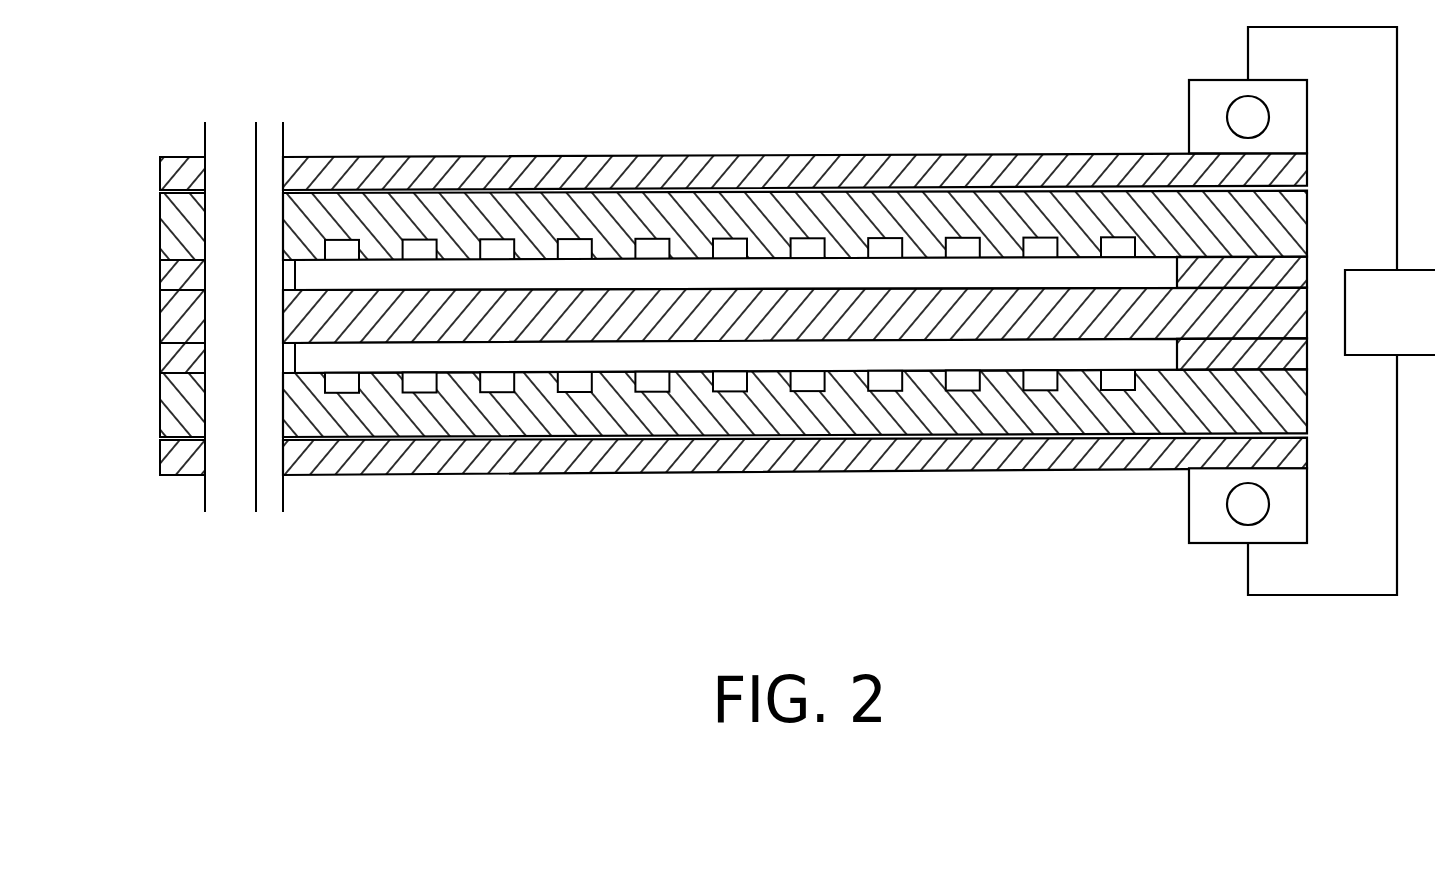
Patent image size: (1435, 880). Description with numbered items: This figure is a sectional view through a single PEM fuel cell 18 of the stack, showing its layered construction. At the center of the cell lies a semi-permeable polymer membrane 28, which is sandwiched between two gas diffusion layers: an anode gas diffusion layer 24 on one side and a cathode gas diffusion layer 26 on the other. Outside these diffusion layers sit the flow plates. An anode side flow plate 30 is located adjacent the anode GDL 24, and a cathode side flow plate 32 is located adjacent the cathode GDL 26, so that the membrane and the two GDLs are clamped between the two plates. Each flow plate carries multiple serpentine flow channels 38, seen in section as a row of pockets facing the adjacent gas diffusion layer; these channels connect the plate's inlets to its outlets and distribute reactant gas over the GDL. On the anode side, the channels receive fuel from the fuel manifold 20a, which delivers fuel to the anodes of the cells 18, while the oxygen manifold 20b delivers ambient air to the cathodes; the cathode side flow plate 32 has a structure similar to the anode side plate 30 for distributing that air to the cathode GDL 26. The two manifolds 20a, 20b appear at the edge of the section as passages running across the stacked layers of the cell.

The PEM fuel cell 18 is at (793, 369).
The fuel manifold 20a is at (230, 138).
The oxygen manifold 20b is at (270, 500).
The anode gas diffusion layer 24 is at (885, 368).
The cathode gas diffusion layer 26 is at (885, 258).
The semi-permeable polymer membrane 28 is at (1042, 305).
The anode side flow plate 30 is at (795, 461).
The cathode side flow plate 32 is at (486, 250).
The serpentine flow channels 38 is at (500, 383).